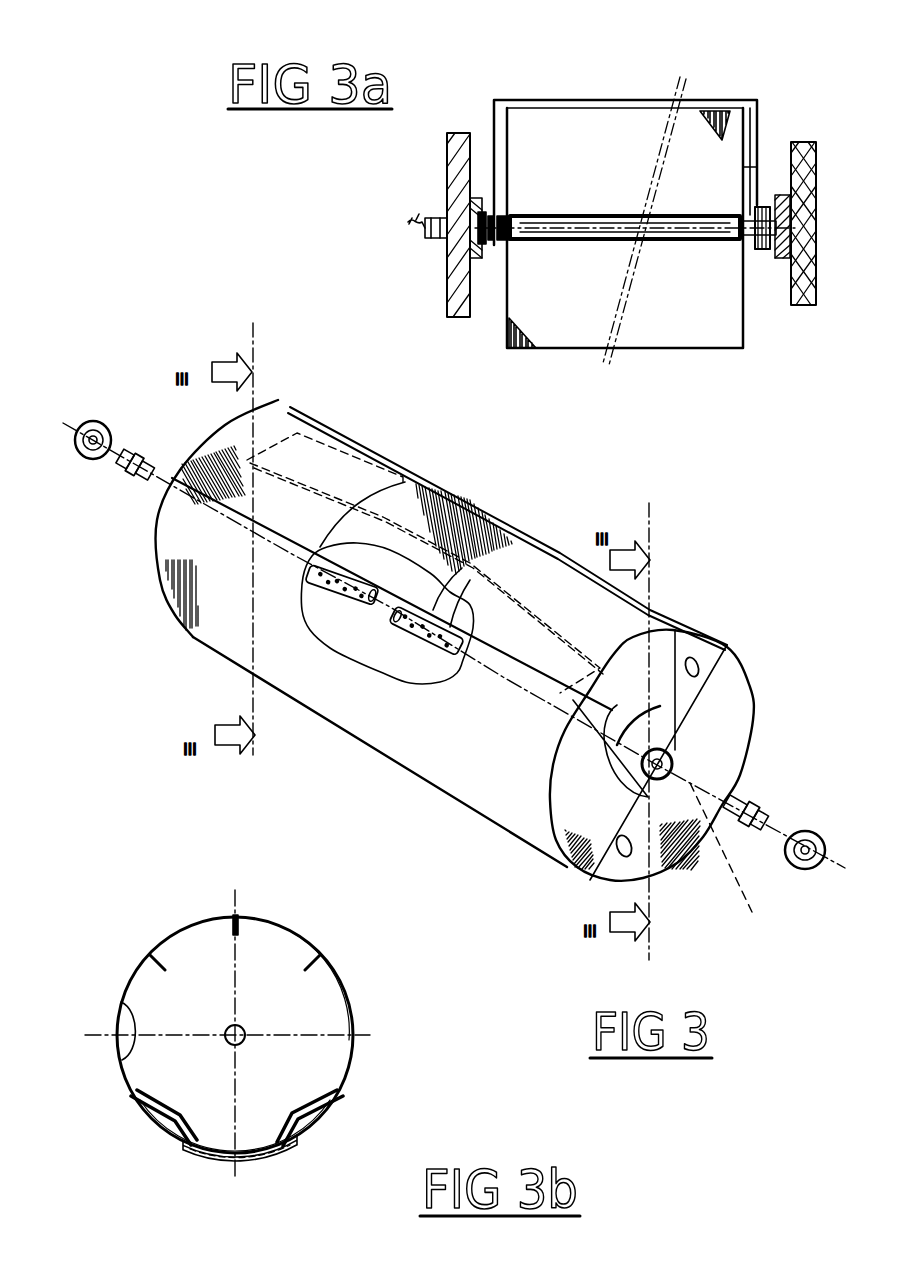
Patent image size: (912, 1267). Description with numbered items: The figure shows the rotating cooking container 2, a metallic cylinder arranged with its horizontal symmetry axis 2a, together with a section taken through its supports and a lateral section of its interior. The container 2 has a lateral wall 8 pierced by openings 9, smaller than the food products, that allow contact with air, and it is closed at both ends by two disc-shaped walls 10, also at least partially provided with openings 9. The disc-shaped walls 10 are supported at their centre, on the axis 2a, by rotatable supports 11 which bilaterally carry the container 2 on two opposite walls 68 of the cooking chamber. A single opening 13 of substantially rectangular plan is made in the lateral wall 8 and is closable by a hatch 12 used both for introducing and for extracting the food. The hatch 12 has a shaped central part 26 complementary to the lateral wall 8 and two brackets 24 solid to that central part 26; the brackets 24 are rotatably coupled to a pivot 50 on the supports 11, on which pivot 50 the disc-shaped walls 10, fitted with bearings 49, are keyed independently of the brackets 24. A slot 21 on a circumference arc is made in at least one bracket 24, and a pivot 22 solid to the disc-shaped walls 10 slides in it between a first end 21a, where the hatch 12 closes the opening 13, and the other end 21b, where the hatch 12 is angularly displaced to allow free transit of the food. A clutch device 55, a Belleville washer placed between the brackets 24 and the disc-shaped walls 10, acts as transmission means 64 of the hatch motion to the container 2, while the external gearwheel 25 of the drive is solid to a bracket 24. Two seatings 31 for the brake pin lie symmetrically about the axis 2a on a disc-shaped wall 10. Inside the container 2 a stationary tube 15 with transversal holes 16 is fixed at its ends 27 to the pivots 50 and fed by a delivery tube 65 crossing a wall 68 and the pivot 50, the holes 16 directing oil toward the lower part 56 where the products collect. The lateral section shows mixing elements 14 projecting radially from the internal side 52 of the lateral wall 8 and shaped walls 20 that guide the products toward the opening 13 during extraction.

In FIG. 3A, the container 2 is at (696, 97).
In FIG. 3, the container 2 is at (205, 693).
In FIG. 3B, the container 2 is at (360, 985).
In FIG. 3, the axis 2a is at (726, 863).
In FIG. 3A, the lateral wall 8 is at (546, 320).
In FIG. 3, the lateral wall 8 is at (400, 742).
In FIG. 3B, the lateral wall 8 is at (325, 960).
In FIG. 3, the openings 9 is at (158, 590).
In FIG. 3A, the disc-shaped walls 10 is at (506, 283).
In FIG. 3, the disc-shaped walls 10 is at (723, 767).
In FIG. 3A, the rotatable supports 11 is at (450, 247).
In FIG. 3, the hatch 12 is at (278, 420).
In FIG. 3, the opening 13 is at (400, 508).
In FIG. 3B, the opening 13 is at (252, 1136).
In FIG. 3B, the mixing elements 14 is at (172, 940).
In FIG. 3A, the tube 15 is at (618, 208).
In FIG. 3, the tube 15 is at (355, 598).
In FIG. 3, the transversal holes 16 is at (470, 580).
In FIG. 3B, the shaped walls 20 is at (298, 1126).
In FIG. 3, the slot 21 is at (582, 718).
In FIG. 3, the first end of slot 21a is at (668, 706).
In FIG. 3, the other end of slot 21b is at (600, 733).
In FIG. 3A, the pivot 22 is at (756, 205).
In FIG. 3, the pivot 22 is at (668, 720).
In FIG. 3A, the brackets 24 is at (493, 134).
In FIG. 3, the brackets 24 is at (672, 625).
In FIG. 3A, the external gearwheel 25 is at (805, 229).
In FIG. 3, the external gearwheel 25 is at (683, 757).
In FIG. 3A, the central part 26 is at (595, 100).
In FIG. 3, the central part 26 is at (506, 643).
In FIG. 3A, the ends of tube 27 is at (524, 200).
In FIG. 3, the seatings 31 is at (696, 660).
In FIG. 3A, the bearings 49 is at (460, 184).
In FIG. 3, the bearings 49 is at (806, 870).
In FIG. 3, the pivot 50 is at (768, 815).
In FIG. 3B, the internal side 52 is at (122, 1058).
In FIG. 3A, the clutch device 55 is at (770, 262).
In FIG. 3A, the lower part 56 is at (712, 325).
In FIG. 3A, the transmission means 64 is at (762, 228).
In FIG. 3A, the delivery tube 65 is at (532, 218).
In FIG. 3A, the walls 68 is at (457, 152).